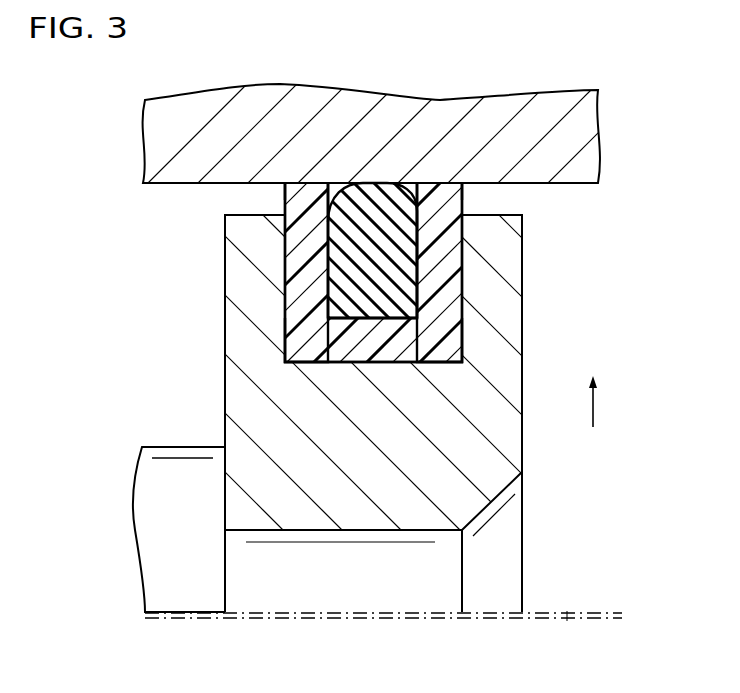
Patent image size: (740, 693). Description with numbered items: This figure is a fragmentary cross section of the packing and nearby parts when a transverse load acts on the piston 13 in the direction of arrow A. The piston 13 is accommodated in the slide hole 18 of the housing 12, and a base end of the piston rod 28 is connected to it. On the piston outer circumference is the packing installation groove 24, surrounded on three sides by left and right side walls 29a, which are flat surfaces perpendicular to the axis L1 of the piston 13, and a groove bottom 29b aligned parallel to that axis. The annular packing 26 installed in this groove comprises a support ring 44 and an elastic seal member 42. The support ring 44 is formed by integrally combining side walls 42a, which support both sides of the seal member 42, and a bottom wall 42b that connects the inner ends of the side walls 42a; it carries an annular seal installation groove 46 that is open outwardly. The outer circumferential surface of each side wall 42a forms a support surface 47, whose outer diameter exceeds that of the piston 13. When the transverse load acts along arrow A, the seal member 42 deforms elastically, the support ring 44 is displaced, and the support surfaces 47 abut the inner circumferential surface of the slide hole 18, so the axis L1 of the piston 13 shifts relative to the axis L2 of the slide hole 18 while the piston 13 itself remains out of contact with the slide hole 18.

The housing 12 is at (588, 162).
The slide hole 18 is at (586, 186).
The piston 13 is at (515, 433).
The packing installation groove 24 is at (300, 263).
The packing 26 is at (465, 258).
The piston rod 28 is at (195, 477).
The seal member 42 is at (382, 202).
The side walls 42a is at (298, 300).
The bottom wall 42b is at (334, 346).
The side walls 29a is at (300, 338).
The groove bottom 29b is at (395, 347).
The support ring 44 is at (320, 183).
The seal installation groove 46 is at (334, 228).
The support surfaces 47 is at (292, 181).
The arrow A is at (602, 401).
The axis of the piston L1 is at (590, 608).
The axis of the slide hole L2 is at (568, 622).